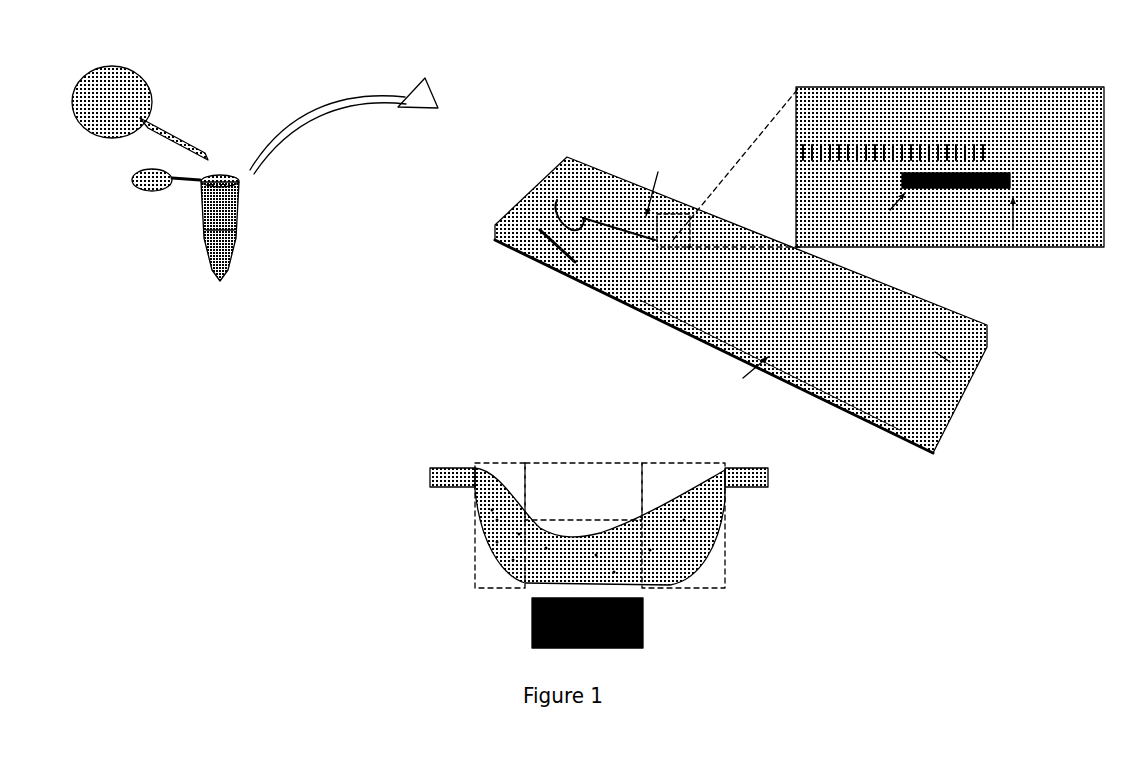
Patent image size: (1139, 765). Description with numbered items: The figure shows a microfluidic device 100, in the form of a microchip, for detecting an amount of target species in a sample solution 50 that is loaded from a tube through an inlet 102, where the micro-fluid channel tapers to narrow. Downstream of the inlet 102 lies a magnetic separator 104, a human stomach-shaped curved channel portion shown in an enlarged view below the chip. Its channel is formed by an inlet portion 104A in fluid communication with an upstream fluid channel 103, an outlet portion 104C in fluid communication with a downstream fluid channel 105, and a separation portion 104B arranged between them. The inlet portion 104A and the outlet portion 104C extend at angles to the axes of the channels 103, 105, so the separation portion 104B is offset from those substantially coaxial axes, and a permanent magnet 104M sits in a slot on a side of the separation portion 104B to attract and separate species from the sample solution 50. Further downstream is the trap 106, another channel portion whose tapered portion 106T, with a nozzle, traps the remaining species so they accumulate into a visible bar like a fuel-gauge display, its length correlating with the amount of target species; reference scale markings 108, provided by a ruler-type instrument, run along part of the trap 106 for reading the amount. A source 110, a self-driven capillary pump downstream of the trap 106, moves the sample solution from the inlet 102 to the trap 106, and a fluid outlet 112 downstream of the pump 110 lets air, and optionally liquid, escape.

The sample solution 50 is at (234, 272).
The microfluidic device 100 is at (572, 46).
The inlet 102 is at (539, 186).
The upstream fluid channel 103 is at (432, 478).
The magnetic separator 104 is at (596, 538).
The inlet portion 104A is at (475, 559).
The separation portion 104B is at (577, 520).
The outlet portion 104C is at (727, 559).
The magnet 104M is at (643, 622).
The downstream fluid channel 105 is at (766, 480).
The trap 106 is at (717, 126).
The tapered portion 106T is at (1000, 178).
The reference scale markings 108 is at (877, 146).
The source 110 is at (770, 365).
The fluid outlet 112 is at (944, 358).